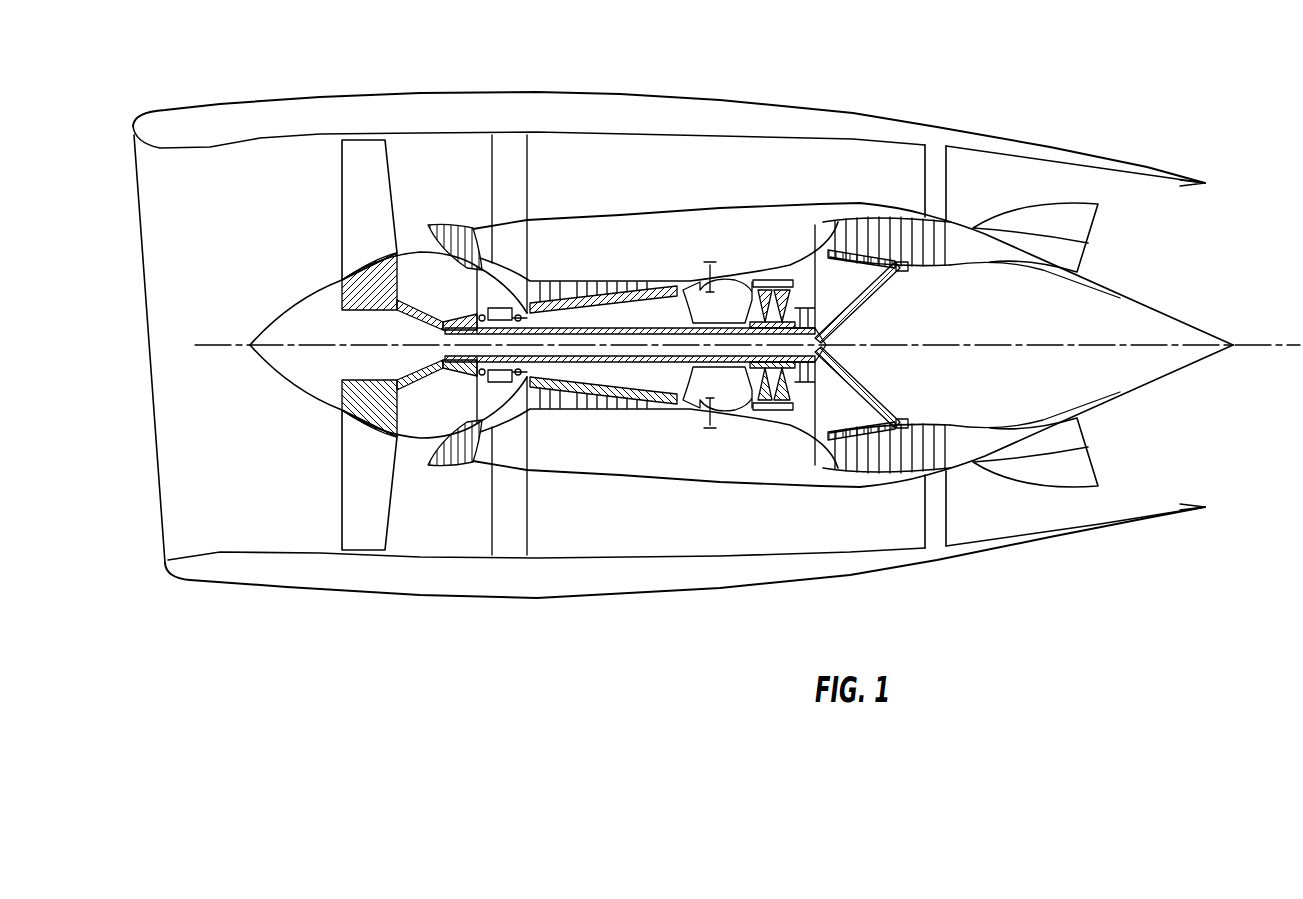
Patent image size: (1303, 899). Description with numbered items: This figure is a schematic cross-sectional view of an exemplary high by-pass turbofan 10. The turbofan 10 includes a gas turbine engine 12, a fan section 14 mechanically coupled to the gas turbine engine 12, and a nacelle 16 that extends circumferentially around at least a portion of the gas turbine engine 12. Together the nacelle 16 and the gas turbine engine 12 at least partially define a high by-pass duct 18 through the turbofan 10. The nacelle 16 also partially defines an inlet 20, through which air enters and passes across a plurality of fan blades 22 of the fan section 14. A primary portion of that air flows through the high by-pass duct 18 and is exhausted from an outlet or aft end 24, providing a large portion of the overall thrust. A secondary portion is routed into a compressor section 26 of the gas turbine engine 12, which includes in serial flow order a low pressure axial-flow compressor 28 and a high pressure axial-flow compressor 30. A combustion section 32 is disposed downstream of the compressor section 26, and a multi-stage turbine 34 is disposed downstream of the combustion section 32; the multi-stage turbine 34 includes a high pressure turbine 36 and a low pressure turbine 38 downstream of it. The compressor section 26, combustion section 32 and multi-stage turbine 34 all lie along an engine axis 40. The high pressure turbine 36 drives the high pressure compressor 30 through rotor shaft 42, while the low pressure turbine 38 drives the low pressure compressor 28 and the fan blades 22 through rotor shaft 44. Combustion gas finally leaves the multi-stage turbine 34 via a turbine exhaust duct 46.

The turbofan 10 is at (913, 98).
The gas turbine engine 12 is at (673, 207).
The fan section 14 is at (293, 205).
The nacelle 16 is at (424, 112).
The high by-pass duct 18 is at (678, 522).
The inlet 20 is at (162, 197).
The fan blades 22 is at (372, 212).
The outlet 24 is at (1118, 193).
The compressor section 26 is at (538, 430).
The low pressure axial-flow compressor 28 is at (474, 228).
The high pressure axial-flow compressor 30 is at (585, 273).
The combustion section 32 is at (737, 263).
The multi-stage turbine 34 is at (815, 460).
The high pressure turbine 36 is at (787, 257).
The low pressure turbine 38 is at (893, 205).
The engine axis 40 is at (1293, 360).
The rotor shaft 42 is at (705, 402).
The rotor shaft 44 is at (623, 375).
The turbine exhaust duct 46 is at (1057, 252).